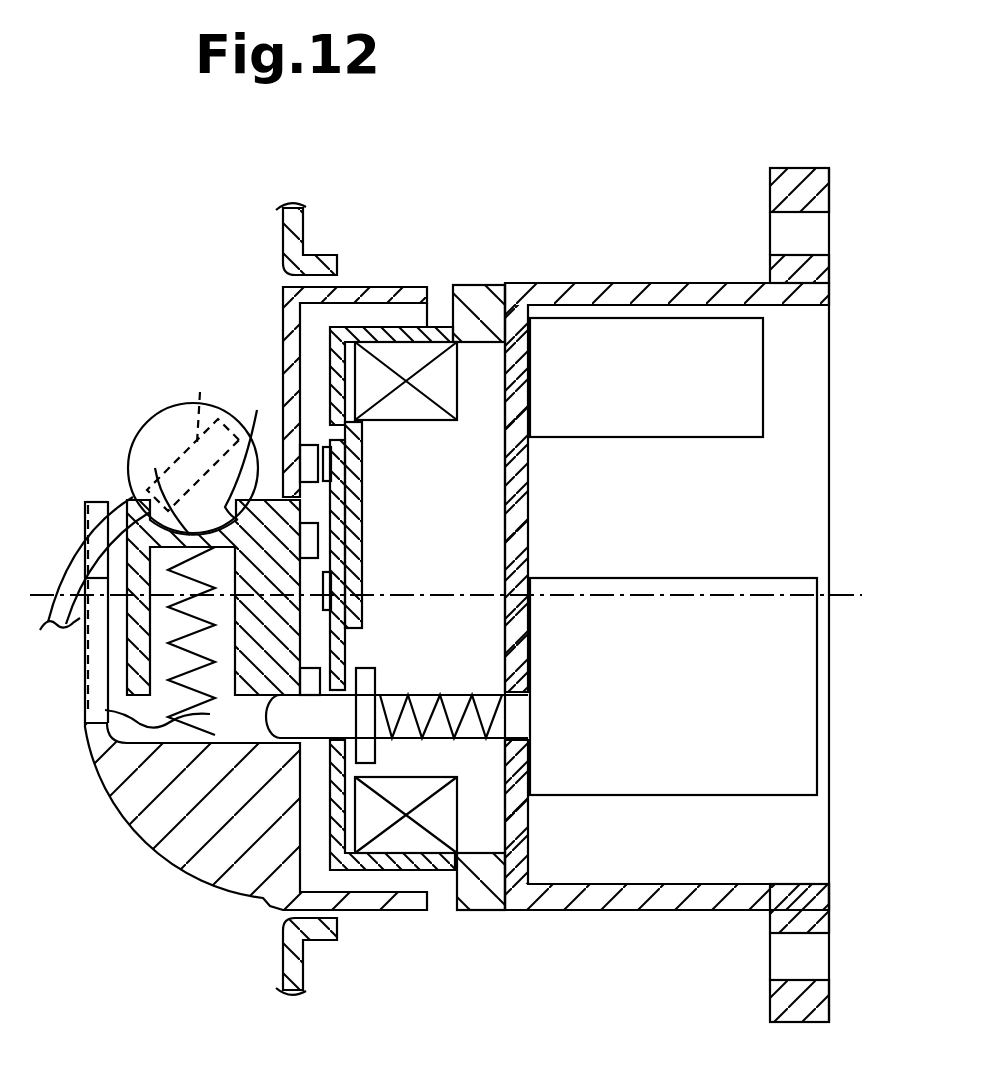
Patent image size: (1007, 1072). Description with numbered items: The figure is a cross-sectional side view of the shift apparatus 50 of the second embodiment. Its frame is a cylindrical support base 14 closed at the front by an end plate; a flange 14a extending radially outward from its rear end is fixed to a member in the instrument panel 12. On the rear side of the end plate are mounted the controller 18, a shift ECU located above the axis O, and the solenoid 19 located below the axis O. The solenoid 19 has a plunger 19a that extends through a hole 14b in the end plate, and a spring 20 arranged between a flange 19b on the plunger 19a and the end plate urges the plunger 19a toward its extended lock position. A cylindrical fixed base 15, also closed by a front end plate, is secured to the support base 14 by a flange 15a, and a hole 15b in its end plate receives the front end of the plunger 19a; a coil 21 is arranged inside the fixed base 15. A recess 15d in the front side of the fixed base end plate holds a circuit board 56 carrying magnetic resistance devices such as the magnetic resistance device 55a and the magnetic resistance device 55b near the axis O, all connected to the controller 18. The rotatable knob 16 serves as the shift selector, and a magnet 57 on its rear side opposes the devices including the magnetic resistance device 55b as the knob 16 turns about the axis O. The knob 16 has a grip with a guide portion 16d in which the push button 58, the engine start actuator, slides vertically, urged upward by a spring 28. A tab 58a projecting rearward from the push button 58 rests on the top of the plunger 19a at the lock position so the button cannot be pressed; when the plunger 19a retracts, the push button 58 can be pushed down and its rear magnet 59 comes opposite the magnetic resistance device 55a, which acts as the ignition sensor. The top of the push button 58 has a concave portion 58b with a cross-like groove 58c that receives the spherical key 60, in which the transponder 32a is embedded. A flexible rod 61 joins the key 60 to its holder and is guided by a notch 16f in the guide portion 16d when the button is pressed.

The shift apparatus 50 is at (686, 138).
The instrument panel 12 is at (282, 232).
The support base 14 is at (665, 295).
The flange 14a is at (800, 185).
The hole 14b is at (506, 738).
The fixed base 15 is at (415, 332).
The flange 15a is at (488, 305).
The hole 15b is at (352, 682).
The recess 15d is at (346, 515).
The knob 16 is at (368, 298).
The guide portion 16d is at (93, 652).
The notch 16f is at (88, 498).
The controller 18 is at (668, 440).
The solenoid 19 is at (770, 780).
The plunger 19a is at (478, 738).
The flange 19b is at (378, 688).
The spring 20 is at (476, 690).
The coil 21 is at (450, 398).
The spring 28 is at (105, 712).
The transponder 32a is at (189, 395).
The magnetic resistance device 55a is at (346, 585).
The magnetic resistance device 55b is at (346, 488).
The circuit board 56 is at (340, 455).
The magnet 57 is at (285, 395).
The push button 58 is at (272, 684).
The tab 58a is at (296, 664).
The concave portion 58b is at (257, 412).
The groove 58c is at (188, 500).
The magnet 59 is at (290, 604).
The key 60 is at (162, 412).
The flexible rod 61 is at (72, 560).
The axis O is at (458, 595).